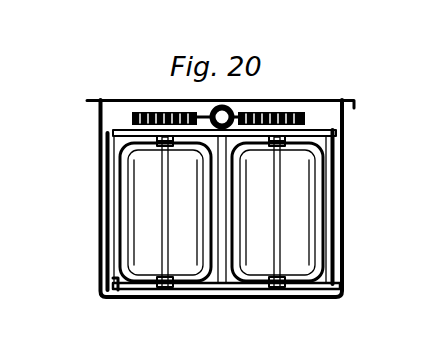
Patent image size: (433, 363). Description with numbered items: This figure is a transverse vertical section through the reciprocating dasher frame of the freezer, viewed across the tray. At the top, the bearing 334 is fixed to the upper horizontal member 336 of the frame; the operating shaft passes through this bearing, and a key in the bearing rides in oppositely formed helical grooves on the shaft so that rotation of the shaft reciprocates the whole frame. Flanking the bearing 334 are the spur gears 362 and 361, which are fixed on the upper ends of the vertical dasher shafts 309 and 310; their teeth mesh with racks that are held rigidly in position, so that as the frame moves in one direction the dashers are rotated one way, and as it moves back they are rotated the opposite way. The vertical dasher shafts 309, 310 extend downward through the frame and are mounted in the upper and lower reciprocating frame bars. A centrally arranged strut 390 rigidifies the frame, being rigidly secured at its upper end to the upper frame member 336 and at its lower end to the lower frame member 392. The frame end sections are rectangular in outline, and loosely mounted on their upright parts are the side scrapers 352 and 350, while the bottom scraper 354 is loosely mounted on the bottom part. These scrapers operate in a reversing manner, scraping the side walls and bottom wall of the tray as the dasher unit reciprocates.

The vertical dasher shaft 309 is at (163, 208).
The vertical dasher shaft 310 is at (277, 211).
The bearing 334 is at (234, 107).
The upper horizontal member 336 is at (127, 132).
The side scraper 350 is at (330, 182).
The side scraper 352 is at (102, 203).
The bottom scraper 354 is at (220, 287).
The spur gear 361 is at (298, 112).
The spur gear 362 is at (157, 129).
The strut 390 is at (222, 222).
The lower frame member 392 is at (197, 284).